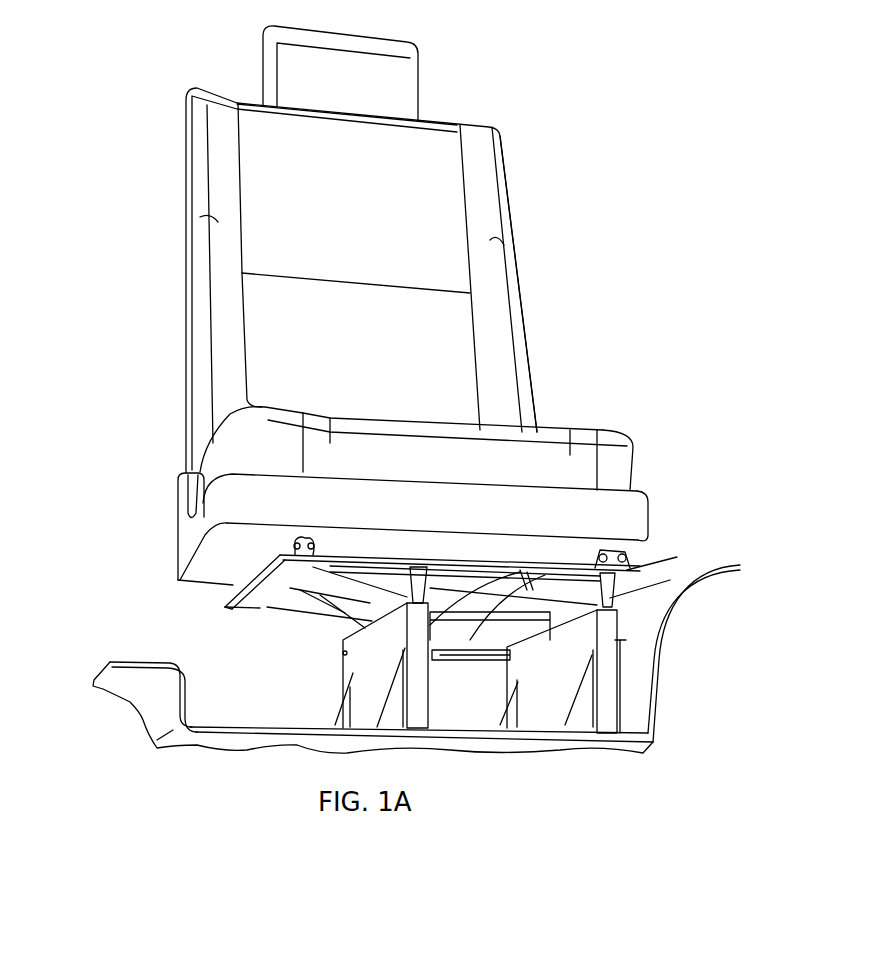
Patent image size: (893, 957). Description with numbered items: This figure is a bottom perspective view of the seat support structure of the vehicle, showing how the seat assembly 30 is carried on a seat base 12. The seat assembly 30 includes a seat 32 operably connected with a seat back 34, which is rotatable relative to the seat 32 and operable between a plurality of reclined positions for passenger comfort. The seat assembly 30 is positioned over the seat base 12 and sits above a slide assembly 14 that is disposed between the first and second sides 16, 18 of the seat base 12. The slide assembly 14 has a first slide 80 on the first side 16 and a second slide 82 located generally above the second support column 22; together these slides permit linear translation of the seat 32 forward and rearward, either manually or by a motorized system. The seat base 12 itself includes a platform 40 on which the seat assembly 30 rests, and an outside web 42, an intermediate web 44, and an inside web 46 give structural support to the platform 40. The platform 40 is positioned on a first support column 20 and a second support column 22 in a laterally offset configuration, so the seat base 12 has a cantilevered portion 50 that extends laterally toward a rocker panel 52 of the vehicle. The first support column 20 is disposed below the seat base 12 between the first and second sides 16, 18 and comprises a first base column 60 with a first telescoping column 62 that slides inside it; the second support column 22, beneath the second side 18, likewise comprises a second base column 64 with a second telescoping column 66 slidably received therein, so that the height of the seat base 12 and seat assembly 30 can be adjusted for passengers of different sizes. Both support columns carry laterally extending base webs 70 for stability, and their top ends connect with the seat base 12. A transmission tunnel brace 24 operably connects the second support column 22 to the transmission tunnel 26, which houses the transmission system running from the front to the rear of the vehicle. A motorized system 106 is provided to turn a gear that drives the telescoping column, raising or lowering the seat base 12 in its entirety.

The seat base 12 is at (286, 657).
The slide assembly 14 is at (221, 593).
The first side 16 is at (190, 537).
The second side 18 is at (647, 523).
The first support column 20 is at (388, 665).
The second support column 22 is at (561, 675).
The transmission tunnel brace 24 is at (623, 642).
The transmission tunnel 26 is at (717, 560).
The seat assembly 30 is at (585, 250).
The seat 32 is at (603, 430).
The seat back 34 is at (520, 288).
The platform 40 is at (470, 563).
The outside web 42 is at (362, 627).
The intermediate web 44 is at (522, 588).
The inside web 46 is at (653, 587).
The cantilevered portion 50 is at (250, 603).
The rocker panel 52 is at (123, 662).
The first base column 60 is at (418, 713).
The first telescoping column 62 is at (405, 570).
The second base column 64 is at (603, 720).
The second telescoping column 66 is at (588, 590).
The base webs 70 is at (387, 687).
The first slide 80 is at (252, 560).
The second slide 82 is at (637, 558).
The motorized system 106 is at (447, 662).